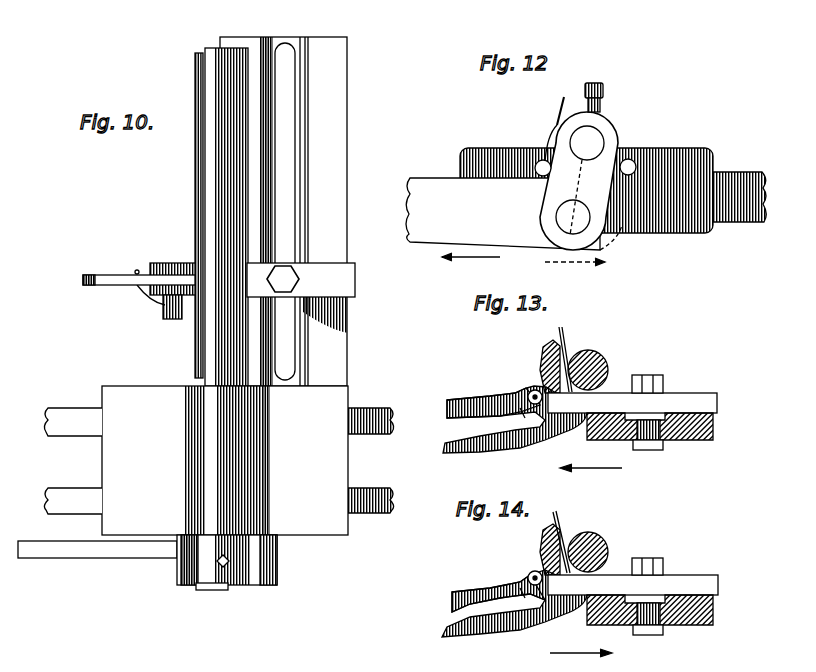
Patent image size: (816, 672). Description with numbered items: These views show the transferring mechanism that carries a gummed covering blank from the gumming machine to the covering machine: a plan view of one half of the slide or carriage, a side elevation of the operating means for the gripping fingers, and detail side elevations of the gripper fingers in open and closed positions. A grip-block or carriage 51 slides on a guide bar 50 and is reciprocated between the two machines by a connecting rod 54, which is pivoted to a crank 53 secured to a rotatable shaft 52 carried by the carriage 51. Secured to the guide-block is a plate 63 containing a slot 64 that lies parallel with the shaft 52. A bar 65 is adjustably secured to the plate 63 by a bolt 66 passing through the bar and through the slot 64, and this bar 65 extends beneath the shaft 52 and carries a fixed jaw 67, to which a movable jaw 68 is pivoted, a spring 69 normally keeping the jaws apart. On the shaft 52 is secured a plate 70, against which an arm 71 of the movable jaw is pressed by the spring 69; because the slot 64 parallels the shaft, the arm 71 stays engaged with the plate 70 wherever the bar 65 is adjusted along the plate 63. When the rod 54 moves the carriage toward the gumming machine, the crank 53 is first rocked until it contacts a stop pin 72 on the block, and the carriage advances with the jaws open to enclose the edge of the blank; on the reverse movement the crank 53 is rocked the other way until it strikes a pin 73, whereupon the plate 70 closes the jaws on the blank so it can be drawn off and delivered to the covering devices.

In FIG. 10, the guide bar 50 is at (376, 437).
In FIG. 12, the guide bar 50 is at (741, 187).
In FIG. 10, the grip-block or carriage 51 is at (318, 532).
In FIG. 12, the grip-block or carriage 51 is at (706, 158).
In FIG. 10, the rotatable shaft 52 is at (213, 330).
In FIG. 12, the rotatable shaft 52 is at (598, 143).
In FIG. 10, the crank 53 is at (196, 586).
In FIG. 12, the crank 53 is at (614, 160).
In FIG. 10, the connecting rod 54 is at (124, 552).
In FIG. 12, the connecting rod 54 is at (503, 214).
In FIG. 10, the plate 63 is at (338, 73).
In FIG. 13, the plate 63 is at (653, 426).
In FIG. 14, the plate 63 is at (654, 601).
In FIG. 10, the slot 64 is at (287, 44).
In FIG. 13, the slot 64 is at (665, 445).
In FIG. 14, the slot 64 is at (662, 626).
In FIG. 10, the bar 65 is at (301, 280).
In FIG. 13, the bar 65 is at (702, 400).
In FIG. 14, the bar 65 is at (704, 580).
In FIG. 10, the bolt 66 is at (283, 279).
In FIG. 13, the bolt 66 is at (663, 382).
In FIG. 14, the bolt 66 is at (660, 560).
In FIG. 10, the fixed jaw 67 is at (86, 287).
In FIG. 13, the fixed jaw 67 is at (486, 450).
In FIG. 14, the fixed jaw 67 is at (486, 636).
In FIG. 10, the movable jaw 68 is at (108, 278).
In FIG. 13, the movable jaw 68 is at (476, 400).
In FIG. 14, the movable jaw 68 is at (478, 594).
In FIG. 10, the spring 69 is at (153, 303).
In FIG. 13, the spring 69 is at (525, 392).
In FIG. 14, the spring 69 is at (525, 573).
In FIG. 10, the plate 70 is at (197, 160).
In FIG. 12, the plate 70 is at (575, 97).
In FIG. 13, the plate 70 is at (565, 336).
In FIG. 14, the plate 70 is at (560, 522).
In FIG. 10, the arm 71 is at (186, 265).
In FIG. 12, the arm 71 is at (553, 134).
In FIG. 13, the arm 71 is at (548, 348).
In FIG. 14, the arm 71 is at (546, 536).
In FIG. 10, the stop pin 72 is at (180, 566).
In FIG. 12, the stop pin 72 is at (538, 161).
In FIG. 10, the stop pin 73 is at (276, 568).
In FIG. 12, the stop pin 73 is at (636, 160).